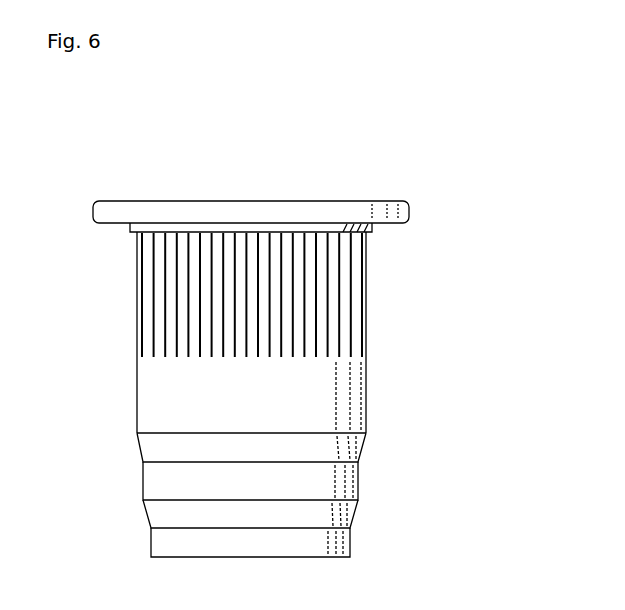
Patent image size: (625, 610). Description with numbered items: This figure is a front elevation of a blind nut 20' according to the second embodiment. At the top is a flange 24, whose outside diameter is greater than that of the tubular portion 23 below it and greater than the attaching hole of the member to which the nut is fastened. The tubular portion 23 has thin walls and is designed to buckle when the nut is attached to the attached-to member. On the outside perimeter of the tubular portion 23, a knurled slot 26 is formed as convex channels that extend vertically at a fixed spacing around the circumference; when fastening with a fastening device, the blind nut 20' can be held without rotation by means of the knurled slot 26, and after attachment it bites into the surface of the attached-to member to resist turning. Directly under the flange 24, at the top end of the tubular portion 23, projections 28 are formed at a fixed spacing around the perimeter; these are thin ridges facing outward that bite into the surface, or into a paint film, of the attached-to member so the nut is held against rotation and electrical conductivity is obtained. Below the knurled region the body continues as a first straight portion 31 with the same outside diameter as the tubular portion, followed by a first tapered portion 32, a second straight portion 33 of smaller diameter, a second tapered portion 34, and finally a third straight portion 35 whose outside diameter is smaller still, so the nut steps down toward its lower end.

The blind nut 20' is at (258, 339).
The flange 24 is at (235, 184).
The projections 28 is at (355, 230).
The knurled slot 26 is at (220, 245).
The tubular portion 23 is at (366, 295).
The first straight portion 31 is at (366, 389).
The first tapered portion 32 is at (363, 450).
The second straight portion 33 is at (358, 483).
The second tapered portion 34 is at (355, 518).
The third straight portion 35 is at (350, 543).